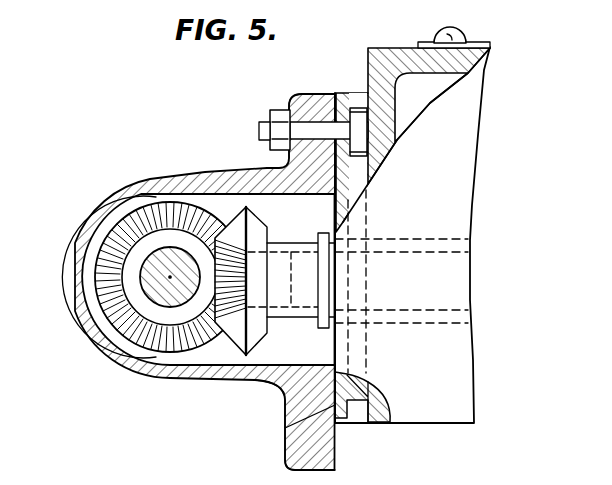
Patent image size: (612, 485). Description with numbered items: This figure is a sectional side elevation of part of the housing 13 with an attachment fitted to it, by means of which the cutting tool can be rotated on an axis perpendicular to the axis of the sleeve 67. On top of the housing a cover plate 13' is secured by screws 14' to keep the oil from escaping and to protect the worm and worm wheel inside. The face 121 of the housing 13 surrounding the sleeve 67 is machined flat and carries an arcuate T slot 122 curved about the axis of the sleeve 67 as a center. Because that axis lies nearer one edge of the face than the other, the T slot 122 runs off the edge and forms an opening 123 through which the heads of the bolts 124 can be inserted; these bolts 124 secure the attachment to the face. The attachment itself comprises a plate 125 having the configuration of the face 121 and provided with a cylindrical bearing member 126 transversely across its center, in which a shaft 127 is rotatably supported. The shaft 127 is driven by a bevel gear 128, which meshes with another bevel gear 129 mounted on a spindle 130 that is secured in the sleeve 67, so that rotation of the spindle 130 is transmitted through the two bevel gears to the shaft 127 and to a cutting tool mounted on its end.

The housing 13 is at (412, 242).
The cover plate 13' is at (479, 34).
The screws 14' is at (468, 28).
The sleeve 67 is at (417, 238).
The face 121 is at (284, 432).
The T slot 122 is at (356, 107).
The opening 123 is at (356, 416).
The bolts 124 is at (300, 112).
The plate 125 is at (305, 92).
The cylindrical bearing member 126 is at (205, 172).
The shaft 127 is at (148, 283).
The bevel gear 128 is at (110, 268).
The bevel gear 129 is at (235, 347).
The spindle 130 is at (431, 302).